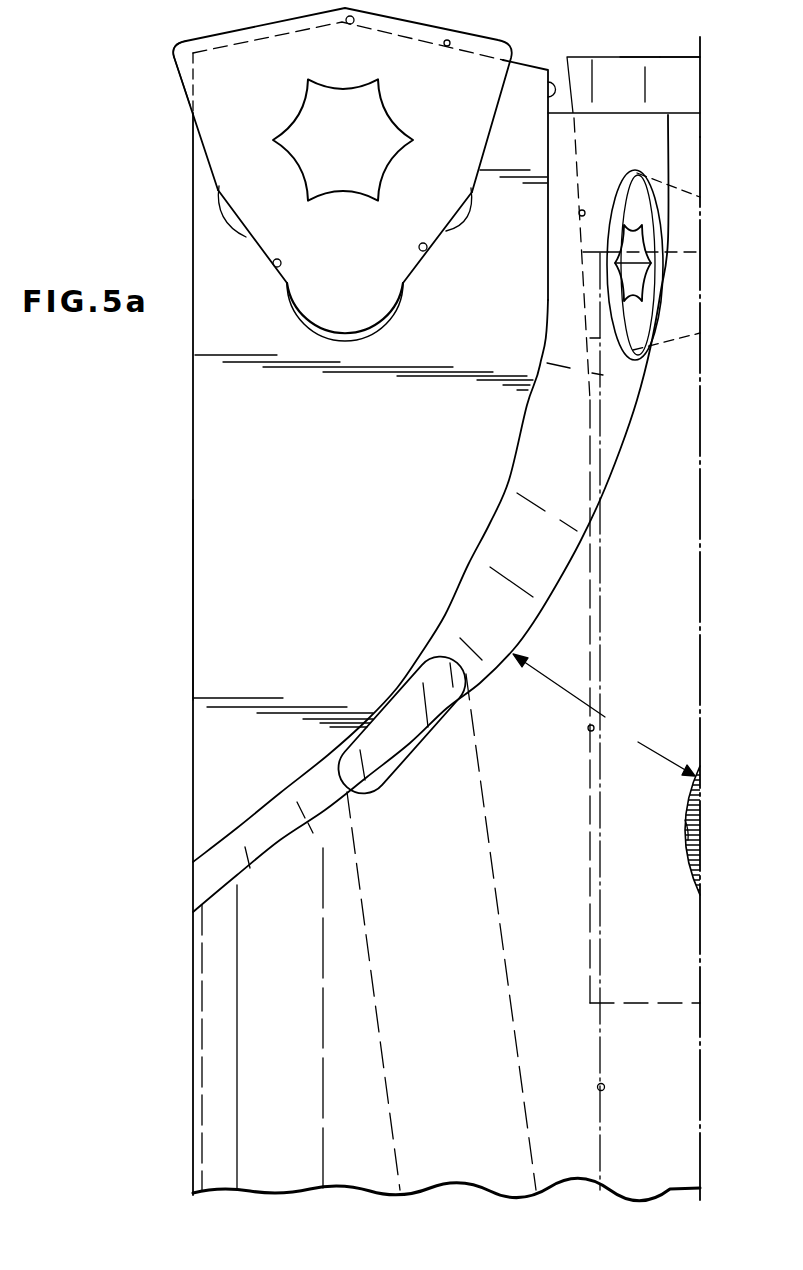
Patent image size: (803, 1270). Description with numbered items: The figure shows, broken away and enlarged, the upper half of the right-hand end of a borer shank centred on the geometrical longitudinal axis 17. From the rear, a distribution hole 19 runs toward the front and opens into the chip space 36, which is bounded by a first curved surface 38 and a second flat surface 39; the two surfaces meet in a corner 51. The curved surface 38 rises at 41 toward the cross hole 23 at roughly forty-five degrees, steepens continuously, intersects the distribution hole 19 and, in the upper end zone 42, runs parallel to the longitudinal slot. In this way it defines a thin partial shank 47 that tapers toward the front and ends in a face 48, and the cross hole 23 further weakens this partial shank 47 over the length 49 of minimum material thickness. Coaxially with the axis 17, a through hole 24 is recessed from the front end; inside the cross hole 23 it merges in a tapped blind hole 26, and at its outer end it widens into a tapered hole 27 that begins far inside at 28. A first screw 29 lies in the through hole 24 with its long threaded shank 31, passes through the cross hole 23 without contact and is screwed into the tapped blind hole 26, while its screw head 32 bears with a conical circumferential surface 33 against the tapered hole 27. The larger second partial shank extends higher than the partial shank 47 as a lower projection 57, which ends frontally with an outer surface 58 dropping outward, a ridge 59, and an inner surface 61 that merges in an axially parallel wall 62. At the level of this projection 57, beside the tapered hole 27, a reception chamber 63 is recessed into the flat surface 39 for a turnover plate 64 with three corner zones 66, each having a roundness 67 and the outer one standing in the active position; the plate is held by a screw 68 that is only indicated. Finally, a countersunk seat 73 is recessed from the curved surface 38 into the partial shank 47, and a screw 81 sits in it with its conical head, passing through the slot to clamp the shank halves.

The geometrical longitudinal axis 17 is at (703, 457).
The distribution hole 19 is at (370, 972).
The cross hole 23 is at (687, 861).
The through hole 24 is at (587, 730).
The tapped blind hole 26 is at (596, 1092).
The tapered hole 27 is at (578, 213).
The start of tapered hole 28 is at (592, 340).
The first screw 29 is at (600, 425).
The threaded shank 31 is at (685, 826).
The screw head 32 is at (633, 78).
The circumferential surface 33 is at (605, 80).
The chip space 36 is at (322, 474).
The first curved surface 38 is at (535, 538).
The second flat surface 39 is at (298, 577).
The extension of curved surface 41 is at (205, 878).
The upper end zone 42 is at (607, 155).
The partial shank 47 is at (638, 622).
The face 48 is at (680, 110).
The length of minimum material thickness 49 is at (604, 715).
The corner 51 is at (490, 523).
The lower projection 57 is at (520, 70).
The outer surface 58 is at (236, 40).
The ridge 59 is at (353, 24).
The inner surface 61 is at (447, 47).
The axially parallel wall 62 is at (548, 100).
The reception chamber 63 is at (275, 268).
The turnover plate 64 is at (451, 184).
The corner zone 66 is at (183, 44).
The roundness 67 is at (175, 53).
The screw 68 is at (332, 151).
The countersunk seat 73 is at (665, 345).
The screw 81 is at (630, 323).